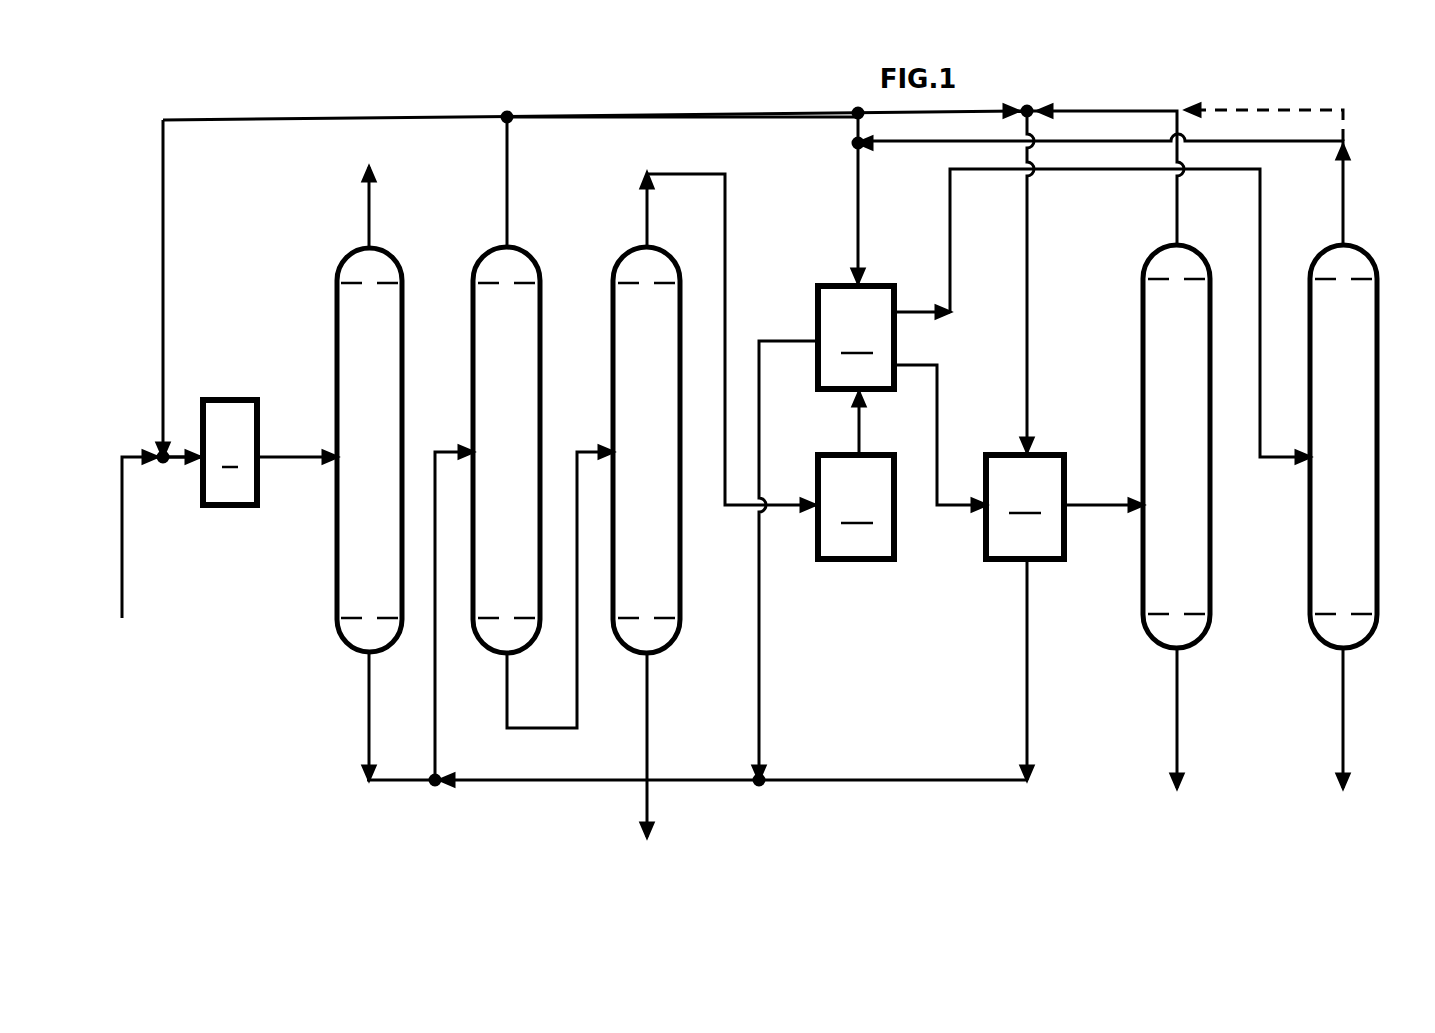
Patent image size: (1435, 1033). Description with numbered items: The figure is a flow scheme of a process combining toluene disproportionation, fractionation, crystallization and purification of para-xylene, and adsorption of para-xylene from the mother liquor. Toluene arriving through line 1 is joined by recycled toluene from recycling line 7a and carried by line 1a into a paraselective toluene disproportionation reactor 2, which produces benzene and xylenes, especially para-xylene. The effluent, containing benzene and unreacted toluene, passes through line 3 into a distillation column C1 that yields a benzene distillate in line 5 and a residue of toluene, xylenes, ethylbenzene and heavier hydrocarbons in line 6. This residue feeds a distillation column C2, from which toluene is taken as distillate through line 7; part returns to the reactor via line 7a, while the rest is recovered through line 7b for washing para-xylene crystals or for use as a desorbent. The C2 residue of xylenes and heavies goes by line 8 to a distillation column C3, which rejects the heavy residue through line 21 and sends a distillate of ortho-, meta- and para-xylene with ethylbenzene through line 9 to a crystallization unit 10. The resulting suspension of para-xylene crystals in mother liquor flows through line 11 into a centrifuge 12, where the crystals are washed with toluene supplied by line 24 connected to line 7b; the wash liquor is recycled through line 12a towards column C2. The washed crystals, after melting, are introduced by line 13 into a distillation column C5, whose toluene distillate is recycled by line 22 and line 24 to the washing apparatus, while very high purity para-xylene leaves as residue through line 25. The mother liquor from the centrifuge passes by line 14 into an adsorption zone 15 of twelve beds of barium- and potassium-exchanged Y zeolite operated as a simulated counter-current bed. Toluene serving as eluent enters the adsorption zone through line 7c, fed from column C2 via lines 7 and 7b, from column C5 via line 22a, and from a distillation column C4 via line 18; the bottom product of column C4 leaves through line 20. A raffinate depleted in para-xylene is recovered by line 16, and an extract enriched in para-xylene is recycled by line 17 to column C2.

The line 1 is at (122, 562).
The line 1a is at (177, 462).
The paraselective toluene disproportionation reactor 2 is at (230, 452).
The line 3 is at (287, 458).
The line 5 is at (369, 222).
The line 6 is at (367, 705).
The line 7 is at (507, 222).
The recycling line 7a is at (165, 282).
The line 7b is at (588, 117).
The line 7c is at (1030, 212).
The line 8 is at (508, 698).
The line 9 is at (647, 222).
The crystallization unit 10 is at (856, 507).
The line 11 is at (857, 427).
The centrifuge 12 is at (856, 337).
The line 12a is at (763, 658).
The line 13 is at (950, 258).
The line 14 is at (938, 368).
The adsorption zone 15 is at (1025, 507).
The line 16 is at (1087, 508).
The line 17 is at (1030, 640).
The line 18 is at (1177, 210).
The bottoms line of column C4 20 is at (1178, 737).
The line 21 is at (648, 812).
The line 22 is at (905, 148).
The line 22a is at (1345, 130).
The line 24 is at (857, 208).
The line 25 is at (1345, 737).
The distillation column C1 is at (369, 450).
The distillation column C2 is at (506, 450).
The distillation column C3 is at (646, 450).
The distillation column C4 is at (1176, 446).
The distillation column C5 is at (1343, 446).